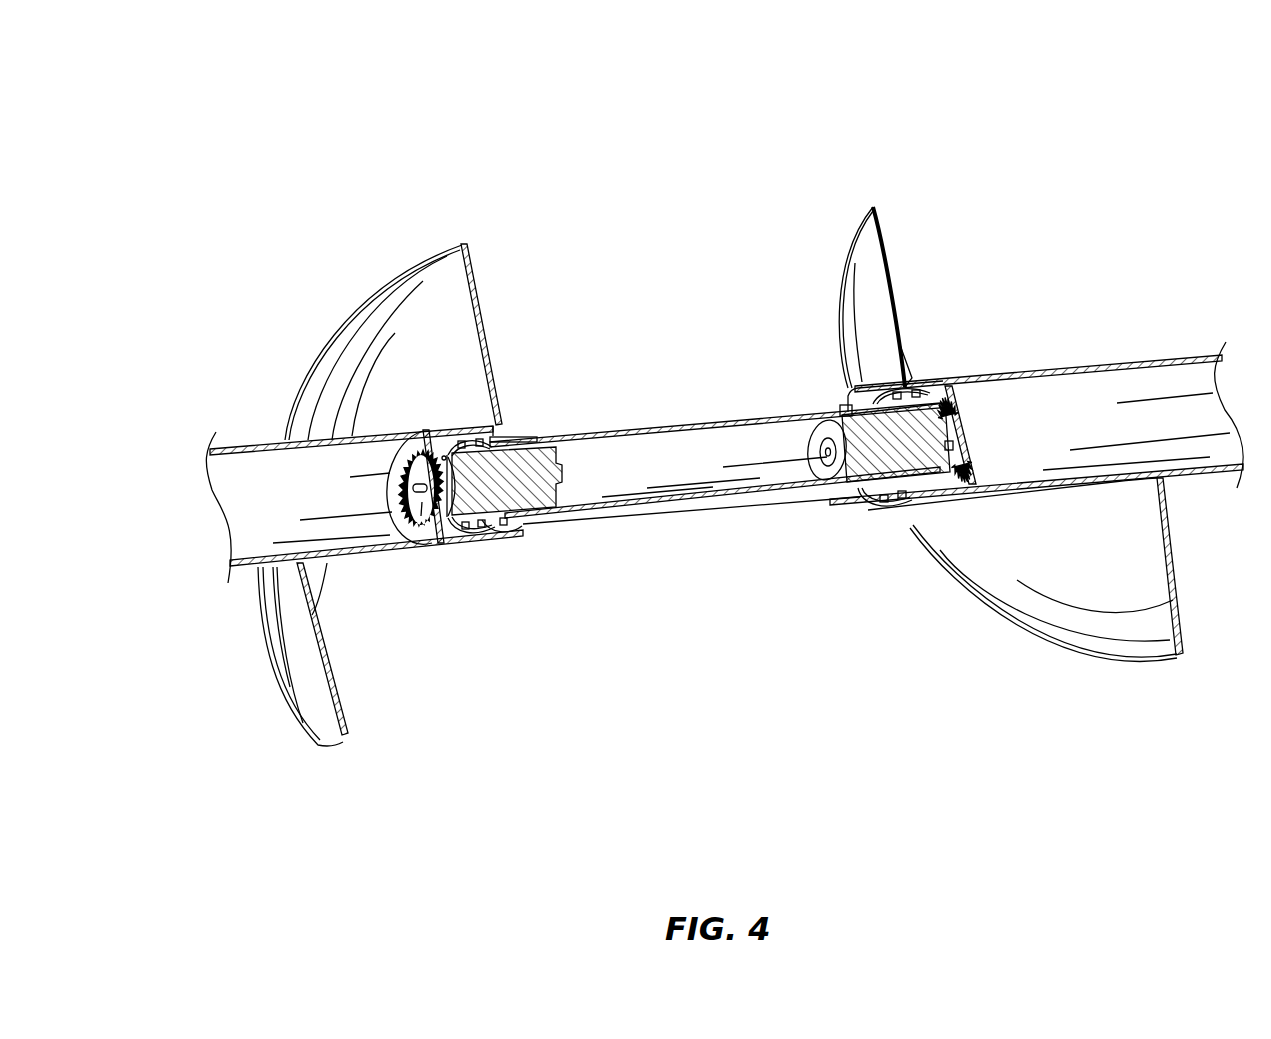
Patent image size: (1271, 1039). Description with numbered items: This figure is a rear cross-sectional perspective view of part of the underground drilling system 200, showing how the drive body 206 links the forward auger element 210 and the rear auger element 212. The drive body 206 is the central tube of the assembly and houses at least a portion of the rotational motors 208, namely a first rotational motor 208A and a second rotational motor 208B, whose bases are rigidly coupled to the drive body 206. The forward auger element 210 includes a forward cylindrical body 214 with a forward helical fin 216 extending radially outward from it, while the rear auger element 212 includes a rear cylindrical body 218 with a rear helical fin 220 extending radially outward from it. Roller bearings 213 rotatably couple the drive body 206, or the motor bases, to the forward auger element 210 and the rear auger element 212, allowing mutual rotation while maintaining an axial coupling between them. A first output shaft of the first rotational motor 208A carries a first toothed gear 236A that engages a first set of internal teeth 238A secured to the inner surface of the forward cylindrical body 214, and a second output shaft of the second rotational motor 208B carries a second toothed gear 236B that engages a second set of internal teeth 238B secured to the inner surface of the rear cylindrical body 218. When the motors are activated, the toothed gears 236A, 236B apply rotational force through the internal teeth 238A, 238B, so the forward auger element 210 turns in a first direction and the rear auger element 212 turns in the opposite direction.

The system 200 is at (141, 91).
The drive body 206 is at (651, 248).
The rotational motor 208 is at (641, 677).
The first rotational motor 208A is at (833, 476).
The second rotational motor 208B is at (567, 520).
The forward auger element 210 is at (1034, 260).
The rear auger element 212 is at (228, 264).
The roller bearings 213 is at (465, 525).
The forward cylindrical body 214 is at (1207, 483).
The forward helical fin 216 is at (1175, 660).
The rear cylindrical body 218 is at (242, 568).
The rear helical fin 220 is at (330, 744).
The first toothed gear 236A is at (960, 425).
The second toothed gear 236B is at (436, 535).
The first set of internal teeth 238A is at (943, 393).
The second set of internal teeth 238B is at (417, 538).